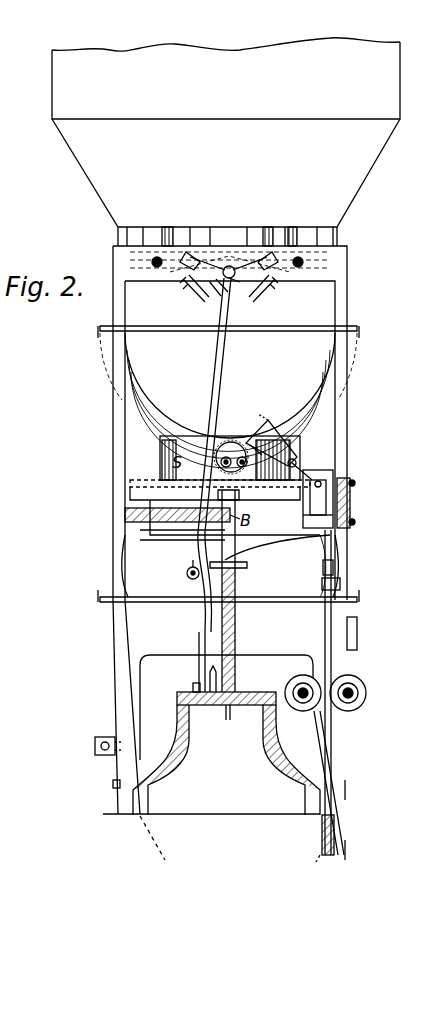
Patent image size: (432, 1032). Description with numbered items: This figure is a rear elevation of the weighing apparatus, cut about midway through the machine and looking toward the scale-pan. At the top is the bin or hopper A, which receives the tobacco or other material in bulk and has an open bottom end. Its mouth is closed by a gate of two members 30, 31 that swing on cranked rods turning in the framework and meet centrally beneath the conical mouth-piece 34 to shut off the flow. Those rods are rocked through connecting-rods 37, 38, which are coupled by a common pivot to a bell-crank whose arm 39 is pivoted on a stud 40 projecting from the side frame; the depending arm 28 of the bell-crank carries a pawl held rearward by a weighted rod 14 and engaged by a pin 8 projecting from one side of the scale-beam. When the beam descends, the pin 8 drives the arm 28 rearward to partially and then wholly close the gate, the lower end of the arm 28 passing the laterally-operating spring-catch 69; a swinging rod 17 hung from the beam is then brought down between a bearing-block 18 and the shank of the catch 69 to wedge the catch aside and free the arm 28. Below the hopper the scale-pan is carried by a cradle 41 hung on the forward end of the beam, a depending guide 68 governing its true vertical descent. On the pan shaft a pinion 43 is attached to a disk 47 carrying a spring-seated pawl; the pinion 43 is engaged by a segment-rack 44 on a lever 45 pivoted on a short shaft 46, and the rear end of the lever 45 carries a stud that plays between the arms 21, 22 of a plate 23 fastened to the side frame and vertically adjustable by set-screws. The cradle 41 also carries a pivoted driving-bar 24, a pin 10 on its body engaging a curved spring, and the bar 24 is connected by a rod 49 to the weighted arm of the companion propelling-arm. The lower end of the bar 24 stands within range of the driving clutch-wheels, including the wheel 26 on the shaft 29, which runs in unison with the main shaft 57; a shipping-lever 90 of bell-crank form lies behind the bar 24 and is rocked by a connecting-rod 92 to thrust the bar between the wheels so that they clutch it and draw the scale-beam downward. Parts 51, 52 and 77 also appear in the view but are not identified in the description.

The bin or hopper A is at (226, 142).
The pin 8 is at (228, 591).
The pin 10 is at (346, 618).
The weighted rod 14 is at (191, 568).
The swinging rod 17 is at (199, 615).
The bearing-block 18 is at (212, 668).
The arm of plate 21 is at (319, 497).
The arm of plate 22 is at (318, 522).
The plate 23 is at (350, 498).
The driving-bar 24 is at (325, 628).
The driving clutch-wheel 26 is at (292, 686).
The depending arm of bell-crank 28 is at (199, 648).
The companion parallel shaft 29 is at (300, 706).
The gate member 30 is at (199, 296).
The gate member 31 is at (262, 296).
The conical mouth-piece 34 is at (234, 292).
The connecting-rod 37 is at (208, 360).
The connecting-rod 38 is at (226, 362).
The bell-crank arm 39 is at (200, 530).
The stud 40 is at (175, 518).
The cradle 41 is at (146, 480).
The pinion 43 is at (233, 453).
The segment-rack 44 is at (268, 422).
The lever 45 is at (262, 437).
The short shaft 46 is at (298, 462).
The disk 47 is at (232, 442).
The rod 49 is at (325, 584).
The upper bowl 51 is at (228, 397).
The lower bowl 52 is at (228, 568).
The main shaft 57 is at (350, 708).
The depending guide 68 is at (236, 624).
The spring-catch 69 is at (193, 686).
The belt 77 is at (322, 783).
The shipping-lever 90 is at (341, 792).
The connecting-rod 92 is at (350, 853).